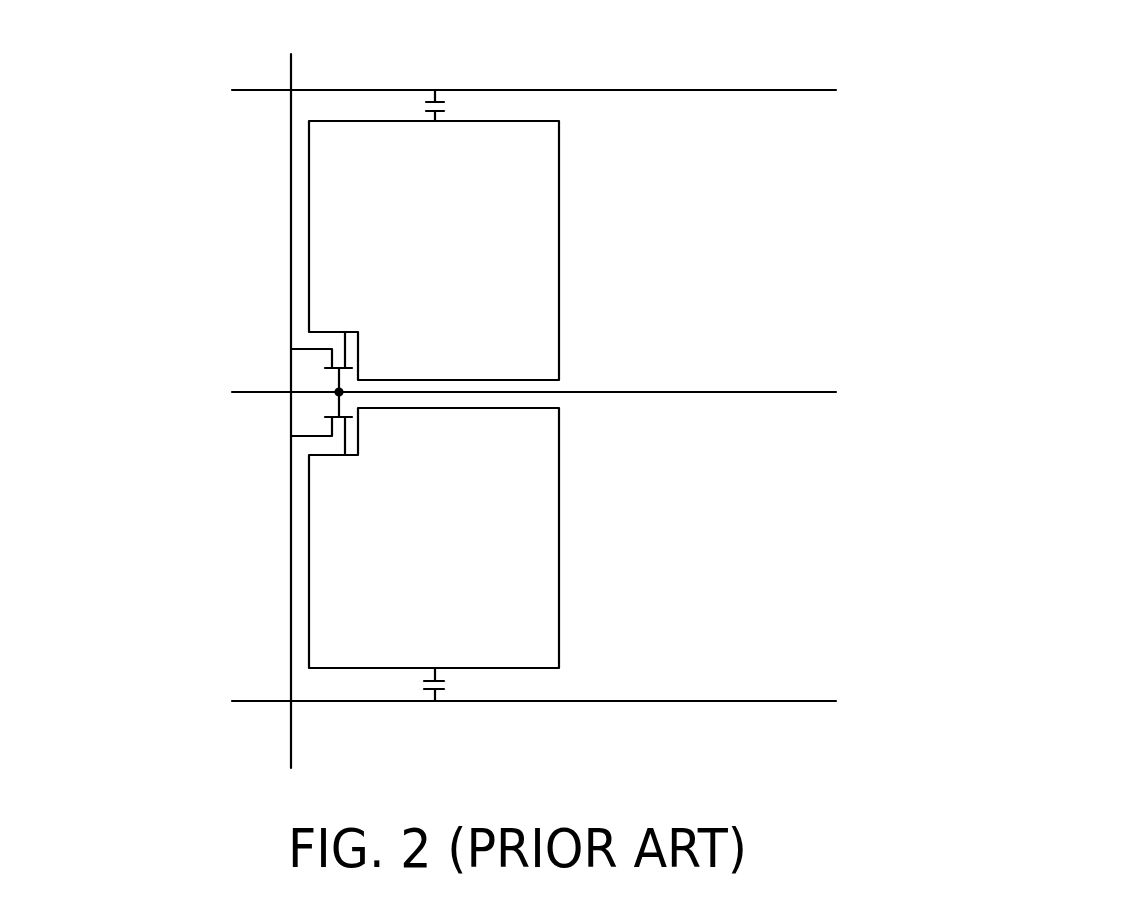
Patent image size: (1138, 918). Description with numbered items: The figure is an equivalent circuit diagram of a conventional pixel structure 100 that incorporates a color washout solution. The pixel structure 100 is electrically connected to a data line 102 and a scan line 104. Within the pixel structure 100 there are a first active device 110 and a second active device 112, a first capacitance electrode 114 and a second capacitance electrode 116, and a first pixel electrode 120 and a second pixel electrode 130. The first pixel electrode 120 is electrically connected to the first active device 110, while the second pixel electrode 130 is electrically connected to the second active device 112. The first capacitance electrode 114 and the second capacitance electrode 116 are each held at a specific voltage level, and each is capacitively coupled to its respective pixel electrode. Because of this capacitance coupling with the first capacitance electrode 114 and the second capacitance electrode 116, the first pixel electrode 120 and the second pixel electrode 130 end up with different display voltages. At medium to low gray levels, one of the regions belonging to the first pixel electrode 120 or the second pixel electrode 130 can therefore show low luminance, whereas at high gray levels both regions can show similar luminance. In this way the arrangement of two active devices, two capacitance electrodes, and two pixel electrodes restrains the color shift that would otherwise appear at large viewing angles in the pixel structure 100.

The pixel structure 100 is at (1107, 768).
The data line 102 is at (288, 725).
The scan line 104 is at (615, 392).
The first active device 110 is at (314, 360).
The second active device 112 is at (302, 402).
The first capacitance electrode 114 is at (535, 90).
The second capacitance electrode 116 is at (607, 703).
The first pixel electrode 120 is at (535, 240).
The second pixel electrode 130 is at (540, 542).